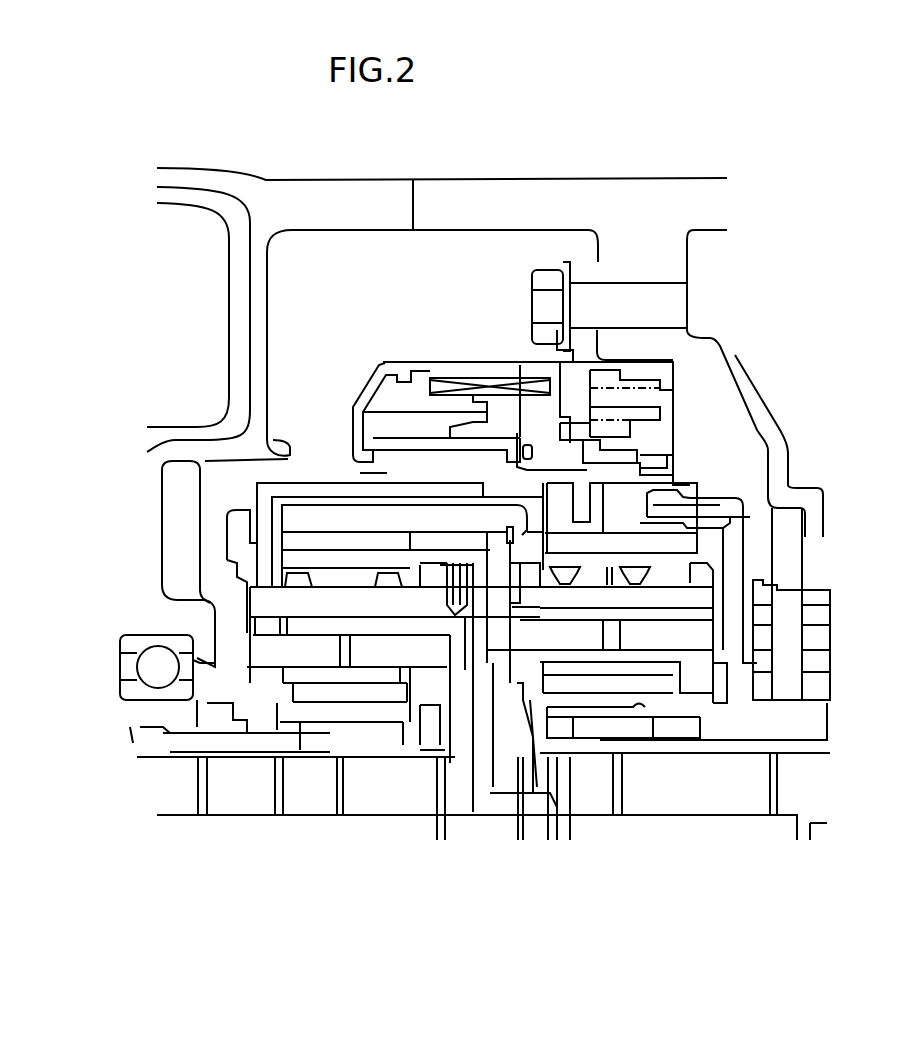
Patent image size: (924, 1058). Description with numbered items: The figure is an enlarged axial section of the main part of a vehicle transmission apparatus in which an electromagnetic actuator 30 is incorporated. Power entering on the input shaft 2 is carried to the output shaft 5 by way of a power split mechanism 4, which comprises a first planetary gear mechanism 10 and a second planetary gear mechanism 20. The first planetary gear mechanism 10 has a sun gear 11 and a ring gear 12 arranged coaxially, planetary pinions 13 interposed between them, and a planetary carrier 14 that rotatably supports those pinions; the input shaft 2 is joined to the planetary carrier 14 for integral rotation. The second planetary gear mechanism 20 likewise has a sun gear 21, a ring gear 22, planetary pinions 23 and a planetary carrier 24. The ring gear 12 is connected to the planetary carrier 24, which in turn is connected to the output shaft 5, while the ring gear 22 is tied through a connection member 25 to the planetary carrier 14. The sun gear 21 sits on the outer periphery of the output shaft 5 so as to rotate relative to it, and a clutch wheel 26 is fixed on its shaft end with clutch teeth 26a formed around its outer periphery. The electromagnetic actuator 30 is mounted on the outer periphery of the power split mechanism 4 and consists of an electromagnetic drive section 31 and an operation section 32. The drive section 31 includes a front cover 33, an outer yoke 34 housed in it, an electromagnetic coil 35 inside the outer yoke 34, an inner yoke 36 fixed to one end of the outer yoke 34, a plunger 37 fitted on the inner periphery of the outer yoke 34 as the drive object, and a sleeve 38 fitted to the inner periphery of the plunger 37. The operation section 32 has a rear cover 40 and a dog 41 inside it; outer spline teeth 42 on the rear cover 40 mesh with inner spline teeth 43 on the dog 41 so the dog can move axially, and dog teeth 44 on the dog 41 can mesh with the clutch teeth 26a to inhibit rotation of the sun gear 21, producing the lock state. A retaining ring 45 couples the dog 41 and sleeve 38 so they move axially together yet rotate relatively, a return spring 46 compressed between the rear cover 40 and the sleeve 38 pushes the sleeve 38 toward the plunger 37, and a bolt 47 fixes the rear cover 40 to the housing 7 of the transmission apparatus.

The input shaft 2 is at (160, 790).
The power split mechanism 4 is at (325, 458).
The output shaft 5 is at (813, 783).
The housing 7 is at (518, 195).
The first planetary gear mechanism 10 is at (240, 617).
The sun gear 11 is at (293, 705).
The ring gear 12 is at (300, 526).
The planetary pinions 13 is at (293, 560).
The planetary carrier 14 is at (257, 537).
The second planetary gear mechanism 20 is at (720, 555).
The sun gear 21 is at (650, 710).
The ring gear 22 is at (745, 497).
The planetary pinions 23 is at (663, 685).
The planetary carrier 24 is at (493, 657).
The connection member 25 is at (292, 420).
The clutch wheel 26 is at (735, 528).
The clutch teeth 26a is at (655, 490).
The electromagnetic actuator 30 is at (476, 318).
The electromagnetic drive section 31 is at (397, 350).
The operation section 32 is at (627, 352).
The front cover 33 is at (370, 388).
The outer yoke 34 is at (438, 366).
The electromagnetic coil 35 is at (460, 380).
The inner yoke 36 is at (562, 380).
The plunger 37 is at (375, 423).
The sleeve 38 is at (324, 466).
The rear cover 40 is at (655, 372).
The dog 41 is at (677, 490).
The outer spline teeth 42 is at (668, 465).
The inner spline teeth 43 is at (590, 455).
The dog teeth 44 is at (677, 495).
The retaining ring 45 is at (527, 447).
The return spring 46 is at (657, 493).
The bolt 47 is at (545, 275).